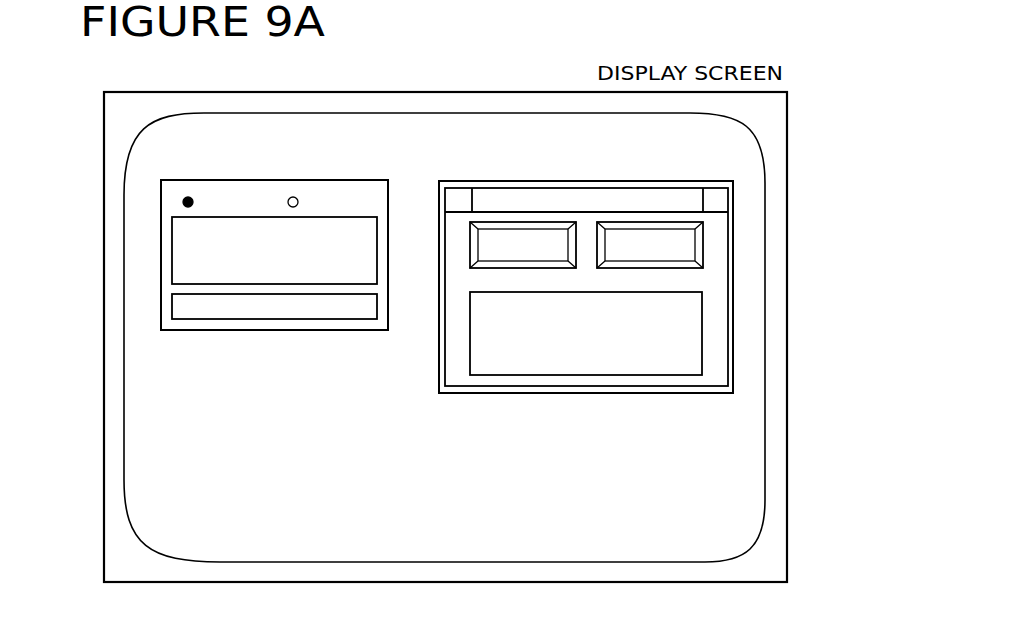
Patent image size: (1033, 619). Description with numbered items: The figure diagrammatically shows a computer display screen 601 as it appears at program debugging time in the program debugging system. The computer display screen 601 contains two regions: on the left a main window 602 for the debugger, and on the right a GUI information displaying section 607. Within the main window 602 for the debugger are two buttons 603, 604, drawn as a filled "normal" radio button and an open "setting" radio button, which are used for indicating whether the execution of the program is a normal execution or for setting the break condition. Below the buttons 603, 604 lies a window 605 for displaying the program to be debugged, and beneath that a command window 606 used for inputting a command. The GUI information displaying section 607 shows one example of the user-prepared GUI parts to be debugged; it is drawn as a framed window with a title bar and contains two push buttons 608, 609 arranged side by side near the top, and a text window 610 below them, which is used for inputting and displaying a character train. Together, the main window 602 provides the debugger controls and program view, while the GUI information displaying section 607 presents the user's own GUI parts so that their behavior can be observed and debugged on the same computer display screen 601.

The computer display screen 601 is at (787, 505).
The main window for the debugger 602 is at (161, 200).
The button 603 is at (189, 196).
The button 604 is at (294, 196).
The window for displaying the program to be debugged 605 is at (172, 242).
The command window 606 is at (172, 302).
The GUI information displaying section 607 is at (734, 248).
The push button 608 is at (513, 222).
The push button 609 is at (644, 222).
The text window 610 is at (728, 330).